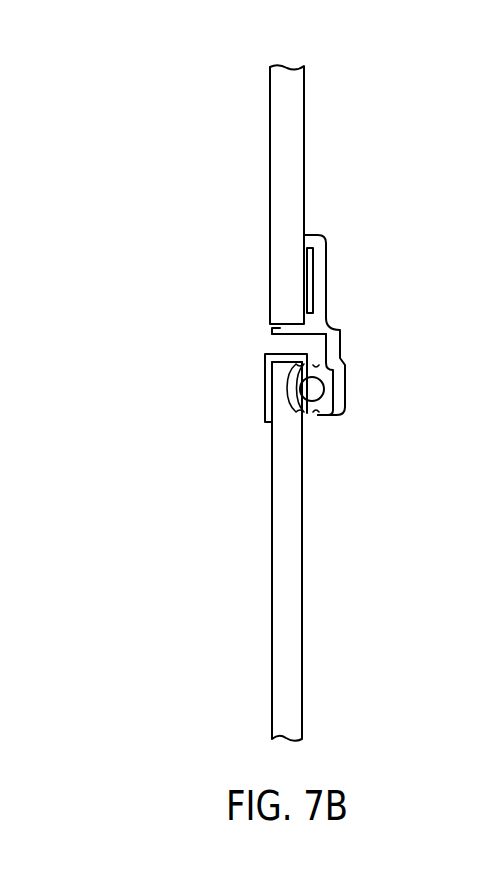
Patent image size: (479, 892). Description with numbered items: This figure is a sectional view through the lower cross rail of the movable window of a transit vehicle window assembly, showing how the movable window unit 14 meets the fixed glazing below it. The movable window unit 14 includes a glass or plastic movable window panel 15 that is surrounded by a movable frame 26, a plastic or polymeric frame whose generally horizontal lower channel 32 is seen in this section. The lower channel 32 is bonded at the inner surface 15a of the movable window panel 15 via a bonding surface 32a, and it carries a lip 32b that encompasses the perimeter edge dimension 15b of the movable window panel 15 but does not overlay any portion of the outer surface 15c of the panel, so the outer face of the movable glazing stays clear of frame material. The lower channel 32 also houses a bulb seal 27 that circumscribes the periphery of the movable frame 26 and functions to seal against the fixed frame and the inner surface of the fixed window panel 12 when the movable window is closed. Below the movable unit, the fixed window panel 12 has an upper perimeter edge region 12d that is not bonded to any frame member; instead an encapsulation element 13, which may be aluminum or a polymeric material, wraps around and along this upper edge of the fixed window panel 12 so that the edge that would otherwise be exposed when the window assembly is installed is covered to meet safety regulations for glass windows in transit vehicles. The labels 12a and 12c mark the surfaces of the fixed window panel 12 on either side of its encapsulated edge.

The fixed window panel 12 is at (288, 557).
The first surface of first panel 12a is at (302, 510).
The second surface of first panel 12c is at (272, 598).
The upper perimeter edge region 12d is at (283, 395).
The encapsulation element 13 is at (268, 368).
The movable window unit 14 is at (402, 179).
The movable window panel 15 is at (293, 133).
The inner surface 15a is at (305, 178).
The perimeter edge dimension 15b is at (283, 307).
The outer surface 15c is at (271, 176).
The movable frame 26 is at (343, 303).
The bulb seal 27 is at (313, 417).
The lower channel 32 is at (331, 333).
The bonding surface 32a is at (307, 277).
The lip 32b is at (272, 333).